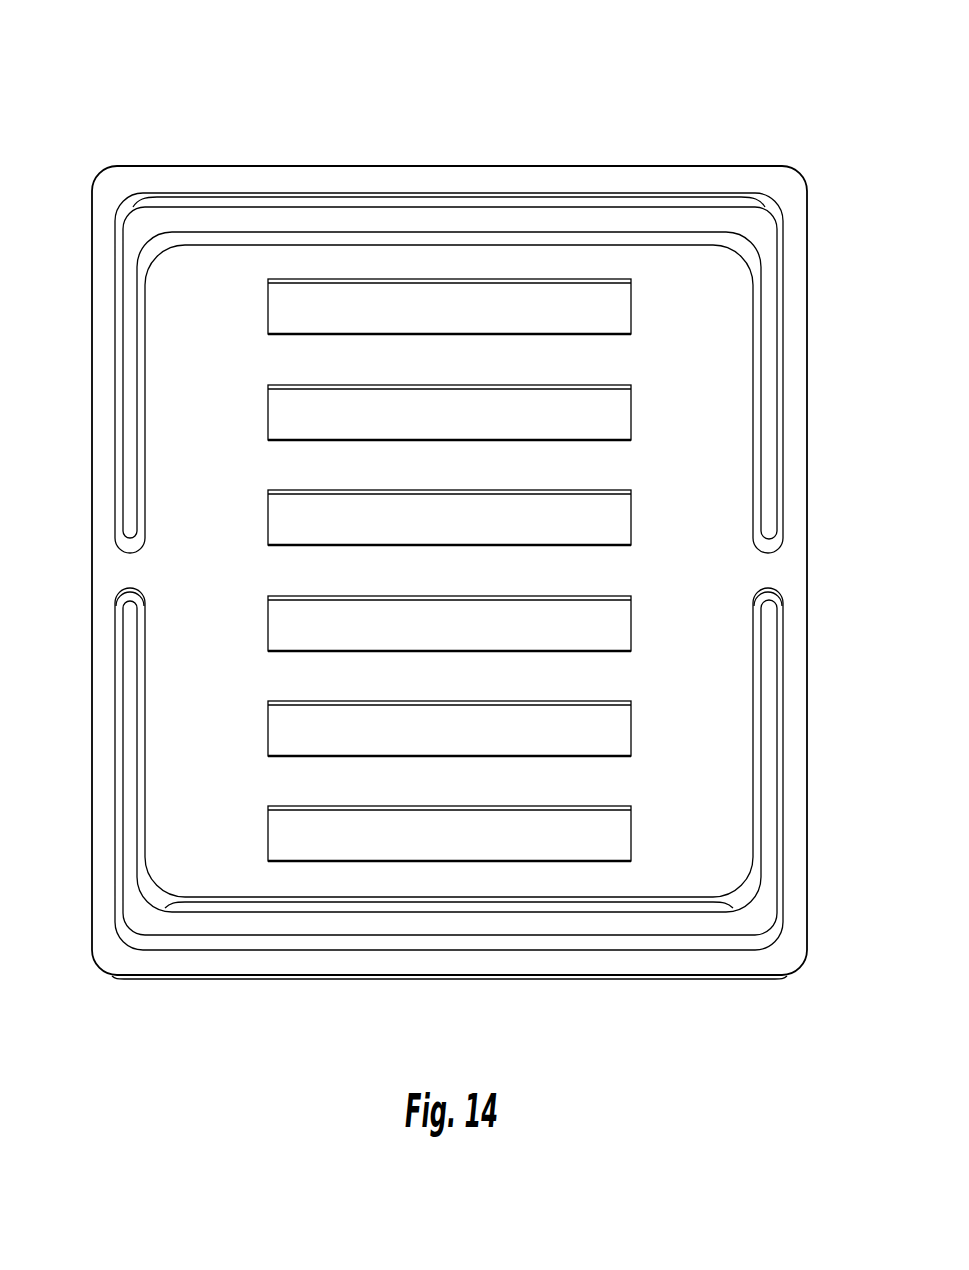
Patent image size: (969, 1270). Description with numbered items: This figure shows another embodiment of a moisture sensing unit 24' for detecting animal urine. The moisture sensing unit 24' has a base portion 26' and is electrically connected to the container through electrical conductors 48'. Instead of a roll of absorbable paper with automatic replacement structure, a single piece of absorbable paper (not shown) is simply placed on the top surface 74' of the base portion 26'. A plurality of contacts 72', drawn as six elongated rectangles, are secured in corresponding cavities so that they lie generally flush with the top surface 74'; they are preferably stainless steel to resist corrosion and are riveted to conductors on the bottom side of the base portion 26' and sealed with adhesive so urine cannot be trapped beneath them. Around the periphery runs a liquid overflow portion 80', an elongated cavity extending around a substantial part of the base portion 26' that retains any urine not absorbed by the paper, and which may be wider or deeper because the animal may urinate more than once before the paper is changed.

The moisture sensing unit 24' is at (465, 496).
The electrical conductors 48' is at (490, 373).
The top surface 74' is at (486, 769).
The liquid overflow portion 80' is at (489, 767).
The base portion 26' is at (483, 932).
The contacts 72' is at (334, 570).